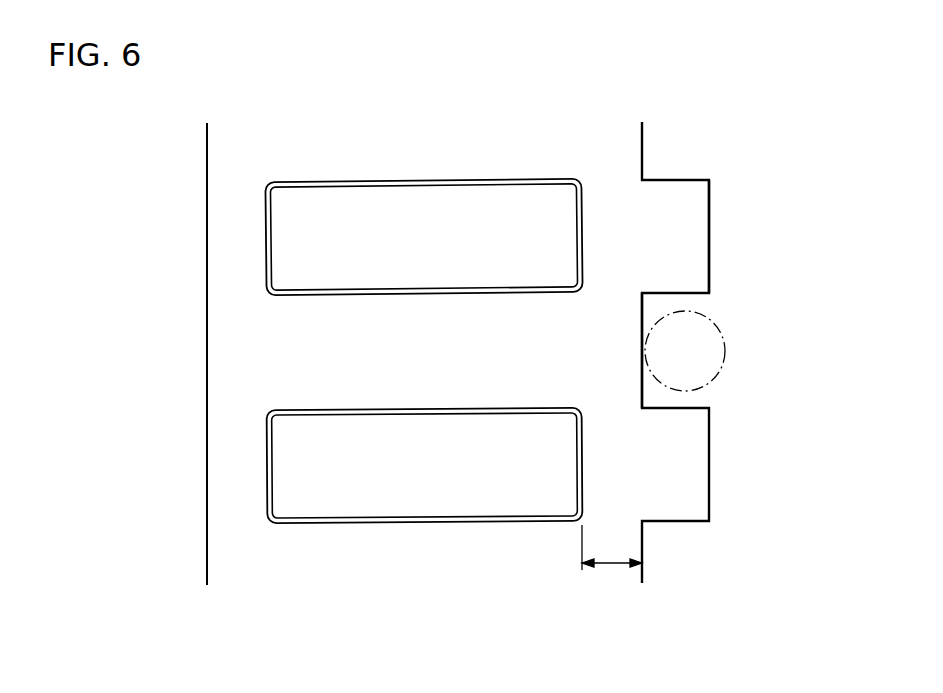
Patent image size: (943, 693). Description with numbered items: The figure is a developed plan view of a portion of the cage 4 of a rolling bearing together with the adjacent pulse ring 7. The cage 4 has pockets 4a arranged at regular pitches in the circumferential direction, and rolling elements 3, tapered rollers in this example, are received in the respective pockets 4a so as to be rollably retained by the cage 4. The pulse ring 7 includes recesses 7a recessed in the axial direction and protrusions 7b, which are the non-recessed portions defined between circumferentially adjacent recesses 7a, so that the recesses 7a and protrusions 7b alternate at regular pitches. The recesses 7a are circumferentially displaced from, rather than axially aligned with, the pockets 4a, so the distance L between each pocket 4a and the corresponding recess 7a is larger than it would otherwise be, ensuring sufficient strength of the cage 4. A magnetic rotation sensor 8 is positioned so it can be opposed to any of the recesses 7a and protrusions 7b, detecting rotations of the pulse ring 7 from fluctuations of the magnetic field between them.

The rolling elements 3 is at (300, 256).
The cage 4 is at (225, 521).
The pockets 4a is at (405, 295).
The pulse ring 7 is at (654, 543).
The recesses 7a is at (642, 387).
The protrusions 7b is at (709, 256).
The magnetic rotation sensor 8 is at (723, 370).
The distance L is at (610, 565).